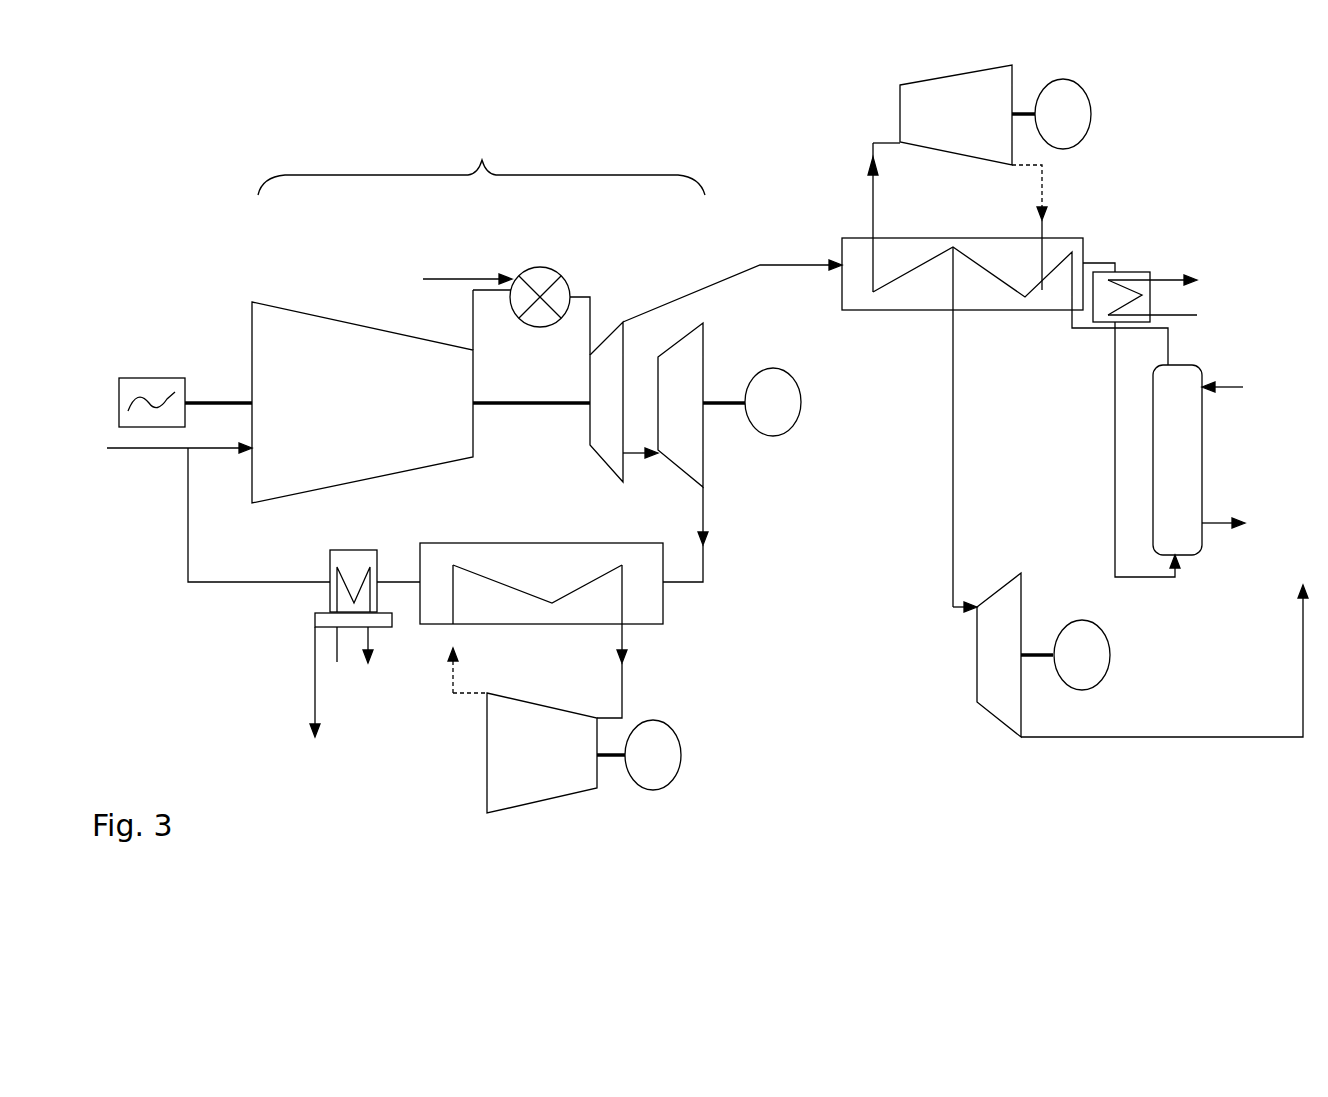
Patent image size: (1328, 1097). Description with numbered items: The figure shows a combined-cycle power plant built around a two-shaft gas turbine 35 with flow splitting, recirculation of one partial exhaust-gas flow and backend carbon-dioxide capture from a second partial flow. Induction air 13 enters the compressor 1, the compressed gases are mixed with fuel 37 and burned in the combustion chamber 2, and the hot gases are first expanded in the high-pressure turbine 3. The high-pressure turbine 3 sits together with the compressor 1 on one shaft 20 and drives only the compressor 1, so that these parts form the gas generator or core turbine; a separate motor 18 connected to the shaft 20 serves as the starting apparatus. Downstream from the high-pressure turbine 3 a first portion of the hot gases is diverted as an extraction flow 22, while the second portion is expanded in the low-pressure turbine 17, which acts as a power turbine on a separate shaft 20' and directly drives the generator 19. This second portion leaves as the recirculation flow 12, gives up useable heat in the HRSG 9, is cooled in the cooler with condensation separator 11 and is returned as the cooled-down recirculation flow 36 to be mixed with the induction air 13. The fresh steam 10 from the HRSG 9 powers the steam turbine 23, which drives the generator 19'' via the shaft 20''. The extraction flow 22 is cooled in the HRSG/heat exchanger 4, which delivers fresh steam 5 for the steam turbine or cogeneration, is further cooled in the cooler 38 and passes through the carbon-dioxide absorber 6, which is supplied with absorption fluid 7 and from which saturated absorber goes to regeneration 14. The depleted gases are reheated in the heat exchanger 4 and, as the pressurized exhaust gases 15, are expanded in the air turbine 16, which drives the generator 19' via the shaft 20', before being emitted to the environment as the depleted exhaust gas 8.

The compressor 1 is at (362, 396).
The combustion chamber 2 is at (531, 292).
The high-pressure turbine 3 is at (606, 402).
The HRSG/heat exchanger 4 is at (1005, 301).
The fresh steam or hot steam for the steam turbine/cogeneration 5 is at (873, 215).
The CO2 absorber 6 is at (1177, 460).
The CO2 absorption fluid 7 is at (1226, 375).
The CO2-depleted exhaust gas 8 is at (1164, 661).
The HRSG (waste-heat boiler) 9 is at (541, 583).
The fresh steam for the steam turbine/cogeneration 10 is at (626, 671).
The cooler with condensation separator 11 is at (365, 627).
The recirculation flow 12 is at (640, 470).
The induction air 13 is at (179, 468).
The CO2-saturated absorber regeneration 14 is at (1227, 504).
The CO2-depleted pressurized exhaust gases for expansion 15 is at (971, 429).
The air turbine 16 is at (999, 655).
The low-pressure turbine 17 is at (683, 452).
The motor 18 is at (185, 386).
The generator 19 is at (773, 402).
The generator 19' is at (1082, 655).
The generator 19'' is at (858, 434).
The shaft 20 is at (531, 420).
The shaft 20' is at (889, 513).
The shaft 20'' is at (823, 441).
The extraction flow 22 is at (732, 282).
The steam turbine 23 is at (749, 439).
The gas turbine 35 is at (481, 166).
The cooled-down recirculation flow 36 is at (259, 530).
The fuel 37 is at (467, 269).
The cooler 38 is at (1140, 411).